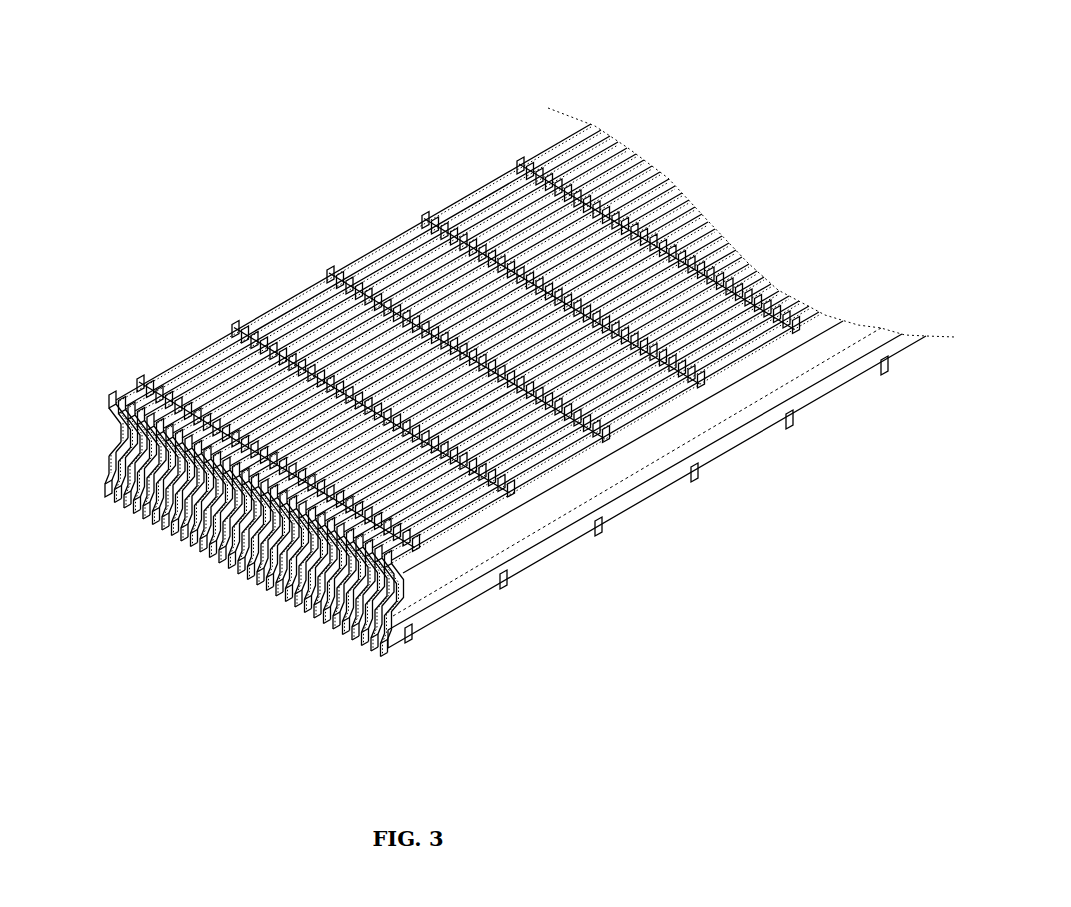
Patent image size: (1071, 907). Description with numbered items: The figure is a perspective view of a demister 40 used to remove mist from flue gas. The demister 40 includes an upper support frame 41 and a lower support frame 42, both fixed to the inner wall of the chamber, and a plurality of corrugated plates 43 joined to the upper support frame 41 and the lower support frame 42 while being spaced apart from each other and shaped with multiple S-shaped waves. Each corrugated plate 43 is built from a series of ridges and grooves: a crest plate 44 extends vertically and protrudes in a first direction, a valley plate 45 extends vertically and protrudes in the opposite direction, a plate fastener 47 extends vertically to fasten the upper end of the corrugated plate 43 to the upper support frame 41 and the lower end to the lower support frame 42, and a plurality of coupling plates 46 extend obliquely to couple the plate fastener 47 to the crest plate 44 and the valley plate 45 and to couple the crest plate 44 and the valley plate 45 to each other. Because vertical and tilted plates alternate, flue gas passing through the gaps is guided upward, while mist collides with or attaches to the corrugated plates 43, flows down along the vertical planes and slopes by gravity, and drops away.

The demister 40 is at (255, 57).
The upper support frame 41 is at (173, 378).
The lower support frame 42 is at (408, 626).
The corrugated plates 43 is at (193, 548).
The crest plate 44 is at (110, 420).
The valley plate 45 is at (100, 458).
The coupling plates 46 is at (99, 470).
The plate fastener 47 is at (99, 482).